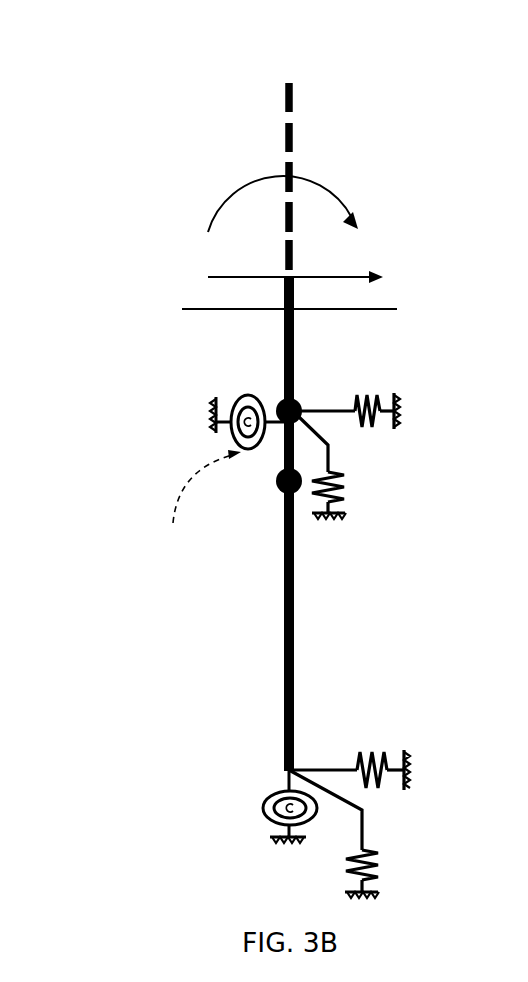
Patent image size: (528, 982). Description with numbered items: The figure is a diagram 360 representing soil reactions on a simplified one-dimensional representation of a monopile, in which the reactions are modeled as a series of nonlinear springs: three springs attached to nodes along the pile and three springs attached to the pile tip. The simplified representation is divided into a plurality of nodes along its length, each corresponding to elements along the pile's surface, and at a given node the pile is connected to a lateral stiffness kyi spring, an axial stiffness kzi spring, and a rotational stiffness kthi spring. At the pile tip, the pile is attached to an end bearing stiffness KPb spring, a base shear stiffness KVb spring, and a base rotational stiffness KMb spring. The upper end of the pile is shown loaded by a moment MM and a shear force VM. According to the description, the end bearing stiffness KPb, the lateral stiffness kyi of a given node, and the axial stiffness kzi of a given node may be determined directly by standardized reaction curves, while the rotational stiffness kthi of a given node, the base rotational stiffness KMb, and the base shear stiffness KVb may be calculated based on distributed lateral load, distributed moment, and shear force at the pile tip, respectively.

The diagram 360 is at (453, 106).
The applied moment M_M MM is at (305, 192).
The applied shear force V_M VM is at (305, 271).
The lateral stiffness kyi is at (350, 392).
The rotational stiffness kthi is at (247, 402).
The axial stiffness kzi is at (336, 468).
The base shear stiffness KVb is at (349, 749).
The end bearing stiffness KPb is at (358, 834).
The base rotational stiffness KMb is at (260, 806).